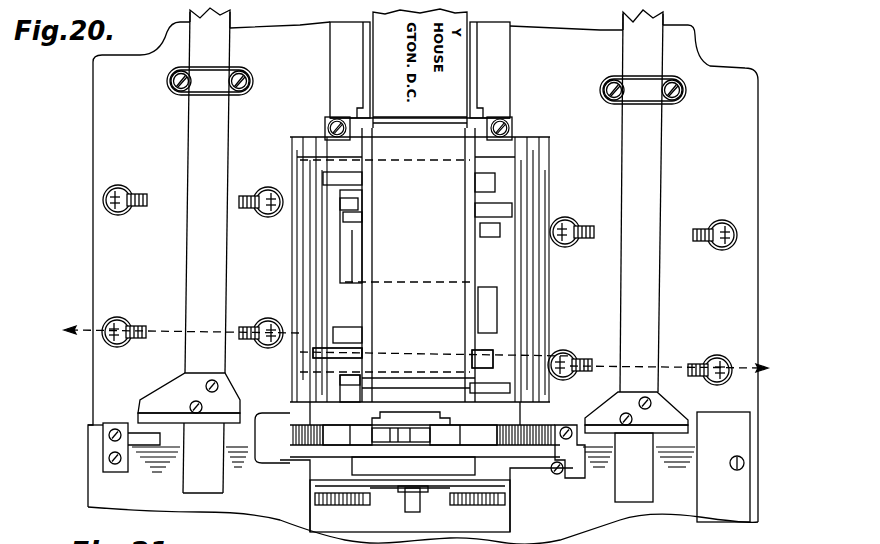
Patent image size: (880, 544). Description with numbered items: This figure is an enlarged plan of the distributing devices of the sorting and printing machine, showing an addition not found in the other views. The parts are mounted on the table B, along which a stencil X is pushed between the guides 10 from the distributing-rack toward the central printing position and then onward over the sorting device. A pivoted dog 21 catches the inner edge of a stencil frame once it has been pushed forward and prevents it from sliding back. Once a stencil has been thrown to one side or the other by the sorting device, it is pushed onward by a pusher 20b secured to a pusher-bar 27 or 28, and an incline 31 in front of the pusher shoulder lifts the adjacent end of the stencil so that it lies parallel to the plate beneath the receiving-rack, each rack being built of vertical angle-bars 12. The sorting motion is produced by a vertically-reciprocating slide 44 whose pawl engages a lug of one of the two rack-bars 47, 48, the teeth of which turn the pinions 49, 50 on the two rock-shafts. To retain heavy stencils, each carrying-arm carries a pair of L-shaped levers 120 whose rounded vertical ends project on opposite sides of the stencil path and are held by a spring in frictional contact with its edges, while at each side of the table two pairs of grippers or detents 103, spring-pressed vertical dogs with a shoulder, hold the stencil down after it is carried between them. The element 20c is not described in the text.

The guides 10 is at (333, 92).
The vertical angle-bars 12 is at (128, 472).
The pusher 20b is at (157, 417).
The bracket base 20c is at (673, 428).
The pivoted dog 21 is at (416, 350).
The pusher-bar 27 is at (641, 201).
The pusher-bar 28 is at (206, 250).
The incline 31 is at (634, 467).
The vertically-reciprocating slide 44 is at (413, 417).
The rack-bar 47 is at (341, 433).
The rack-bar 48 is at (480, 437).
The pinion 49 is at (277, 413).
The pinion 50 is at (568, 436).
The grippers or detents 103 is at (136, 202).
The L-shaped levers 120 is at (472, 356).
The table B is at (92, 279).
The stencil X is at (416, 258).